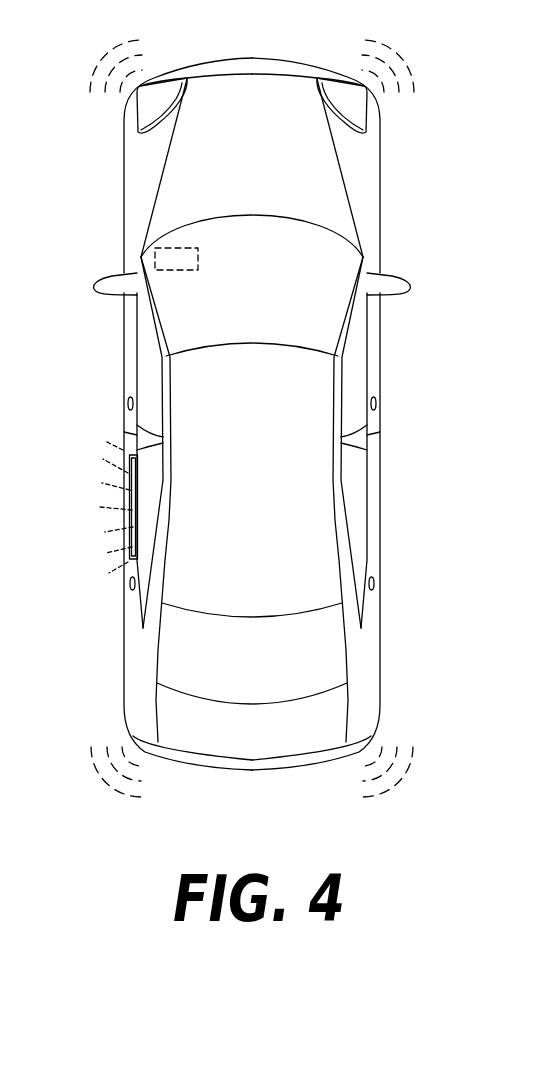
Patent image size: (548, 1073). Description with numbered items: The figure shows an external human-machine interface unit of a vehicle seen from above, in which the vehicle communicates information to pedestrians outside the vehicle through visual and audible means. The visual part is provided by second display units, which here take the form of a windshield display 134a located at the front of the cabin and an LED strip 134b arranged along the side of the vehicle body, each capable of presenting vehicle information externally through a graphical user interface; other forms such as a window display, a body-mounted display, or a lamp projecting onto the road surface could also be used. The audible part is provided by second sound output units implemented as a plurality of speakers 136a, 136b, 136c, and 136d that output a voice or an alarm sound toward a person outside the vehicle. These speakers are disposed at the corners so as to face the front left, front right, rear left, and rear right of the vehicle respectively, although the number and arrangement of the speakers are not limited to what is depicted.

The windshield display 134a is at (141, 258).
The LED strip 134b is at (135, 532).
The speaker 136a is at (364, 88).
The speaker 136b is at (139, 88).
The speaker 136c is at (361, 752).
The speaker 136d is at (143, 752).